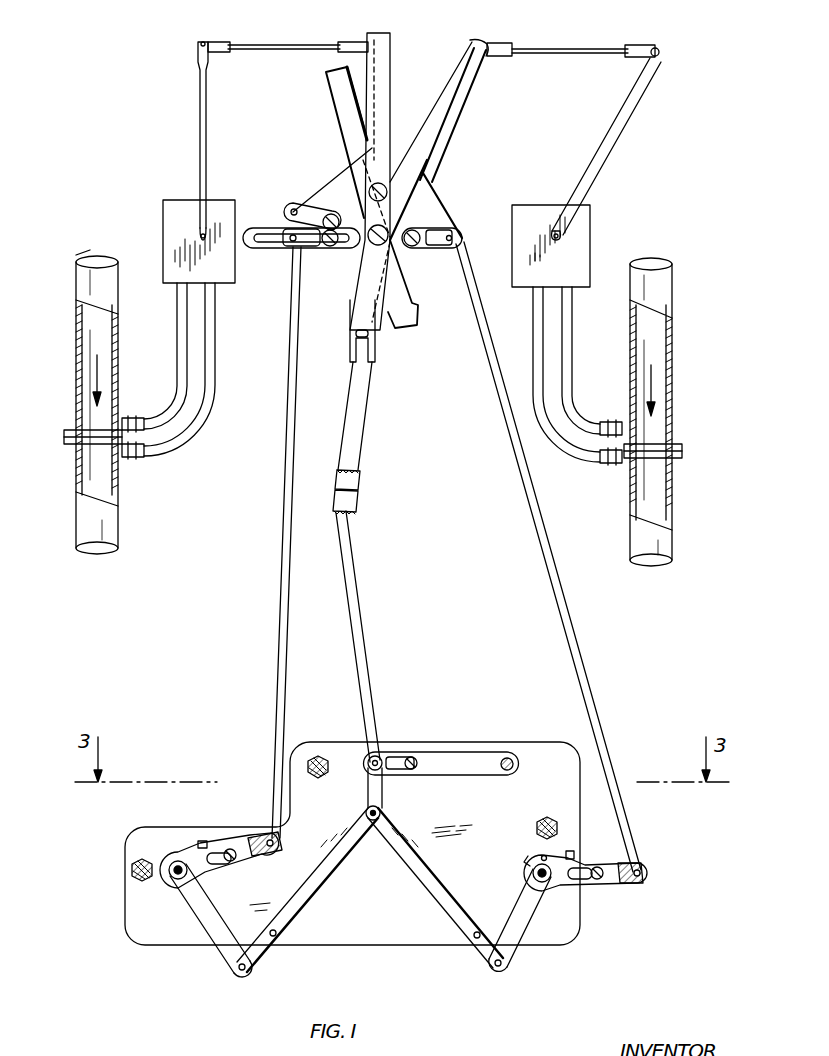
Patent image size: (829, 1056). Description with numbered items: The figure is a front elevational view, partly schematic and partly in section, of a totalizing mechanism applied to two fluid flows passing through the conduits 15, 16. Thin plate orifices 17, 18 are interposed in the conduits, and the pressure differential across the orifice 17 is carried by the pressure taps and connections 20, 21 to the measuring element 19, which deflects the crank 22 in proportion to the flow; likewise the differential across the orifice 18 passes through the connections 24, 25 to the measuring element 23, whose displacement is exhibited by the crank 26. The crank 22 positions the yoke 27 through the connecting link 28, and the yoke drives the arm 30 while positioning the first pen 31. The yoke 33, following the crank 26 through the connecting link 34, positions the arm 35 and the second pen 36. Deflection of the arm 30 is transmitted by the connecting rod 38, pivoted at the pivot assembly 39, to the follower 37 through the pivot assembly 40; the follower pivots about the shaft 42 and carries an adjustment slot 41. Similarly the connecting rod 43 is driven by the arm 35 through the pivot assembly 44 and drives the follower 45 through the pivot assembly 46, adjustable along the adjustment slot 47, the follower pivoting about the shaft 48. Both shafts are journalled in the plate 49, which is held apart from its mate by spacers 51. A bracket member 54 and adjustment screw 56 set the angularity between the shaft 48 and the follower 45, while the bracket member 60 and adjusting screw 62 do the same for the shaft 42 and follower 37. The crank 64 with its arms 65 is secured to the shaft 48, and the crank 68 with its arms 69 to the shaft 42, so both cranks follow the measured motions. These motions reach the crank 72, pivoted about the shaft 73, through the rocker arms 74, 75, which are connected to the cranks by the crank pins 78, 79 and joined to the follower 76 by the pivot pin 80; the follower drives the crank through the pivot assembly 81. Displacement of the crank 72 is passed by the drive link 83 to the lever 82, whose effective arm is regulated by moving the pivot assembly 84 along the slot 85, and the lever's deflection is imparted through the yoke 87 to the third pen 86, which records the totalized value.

The conduit 15 is at (80, 287).
The conduit 16 is at (670, 297).
The thin plate orifice 17 is at (68, 452).
The thin plate orifice 18 is at (676, 456).
The measuring element 19 is at (172, 220).
The pressure tap and connection 20 is at (177, 348).
The pressure tap and connection 21 is at (216, 350).
The crank 22 is at (200, 104).
The measuring element 23 is at (582, 226).
The pressure tap and connection 24 is at (533, 350).
The pressure tap and connection 25 is at (566, 350).
The crank 26 is at (622, 121).
The yoke 27 is at (384, 36).
The connecting link 28 is at (290, 52).
The arm 30 is at (332, 192).
The first pen 31 is at (355, 421).
The yoke 33 is at (452, 108).
The connecting link 34 is at (560, 46).
The arm 35 is at (428, 213).
The second pen 36 is at (356, 485).
The follower 37 is at (222, 850).
The connecting rod 38 is at (281, 492).
The pivot assembly 39 is at (300, 203).
The pivot assembly 40 is at (262, 845).
The adjustment slot 41 is at (217, 864).
The shaft 42 is at (172, 878).
The connecting rod 43 is at (540, 516).
The pivot assembly 44 is at (443, 246).
The follower 45 is at (584, 880).
The pivot assembly 46 is at (636, 880).
The adjustment slot 47 is at (598, 862).
The shaft 48 is at (532, 875).
The plate 49 is at (458, 746).
The spacer 51 is at (322, 756).
The bracket member 54 is at (568, 852).
The adjustment screw 56 is at (580, 854).
The bracket member 60 is at (200, 842).
The adjusting screw 62 is at (212, 842).
The crank 64 is at (522, 906).
The arm 65 is at (520, 928).
The crank 68 is at (200, 906).
The arm 69 is at (230, 932).
The crank 72 is at (440, 770).
The shaft 73 is at (514, 765).
The rocker arm 74 is at (308, 905).
The rocker arm 75 is at (452, 907).
The follower 76 is at (384, 797).
The crank pin 78 is at (254, 968).
The crank pin 79 is at (488, 963).
The pivot pin 80 is at (366, 812).
The pivot assembly 81 is at (387, 758).
The lever 82 is at (277, 249).
The drive link 83 is at (352, 597).
The pivot assembly 84 is at (305, 246).
The slot 85 is at (258, 238).
The third pen 86 is at (345, 508).
The yoke 87 is at (340, 105).